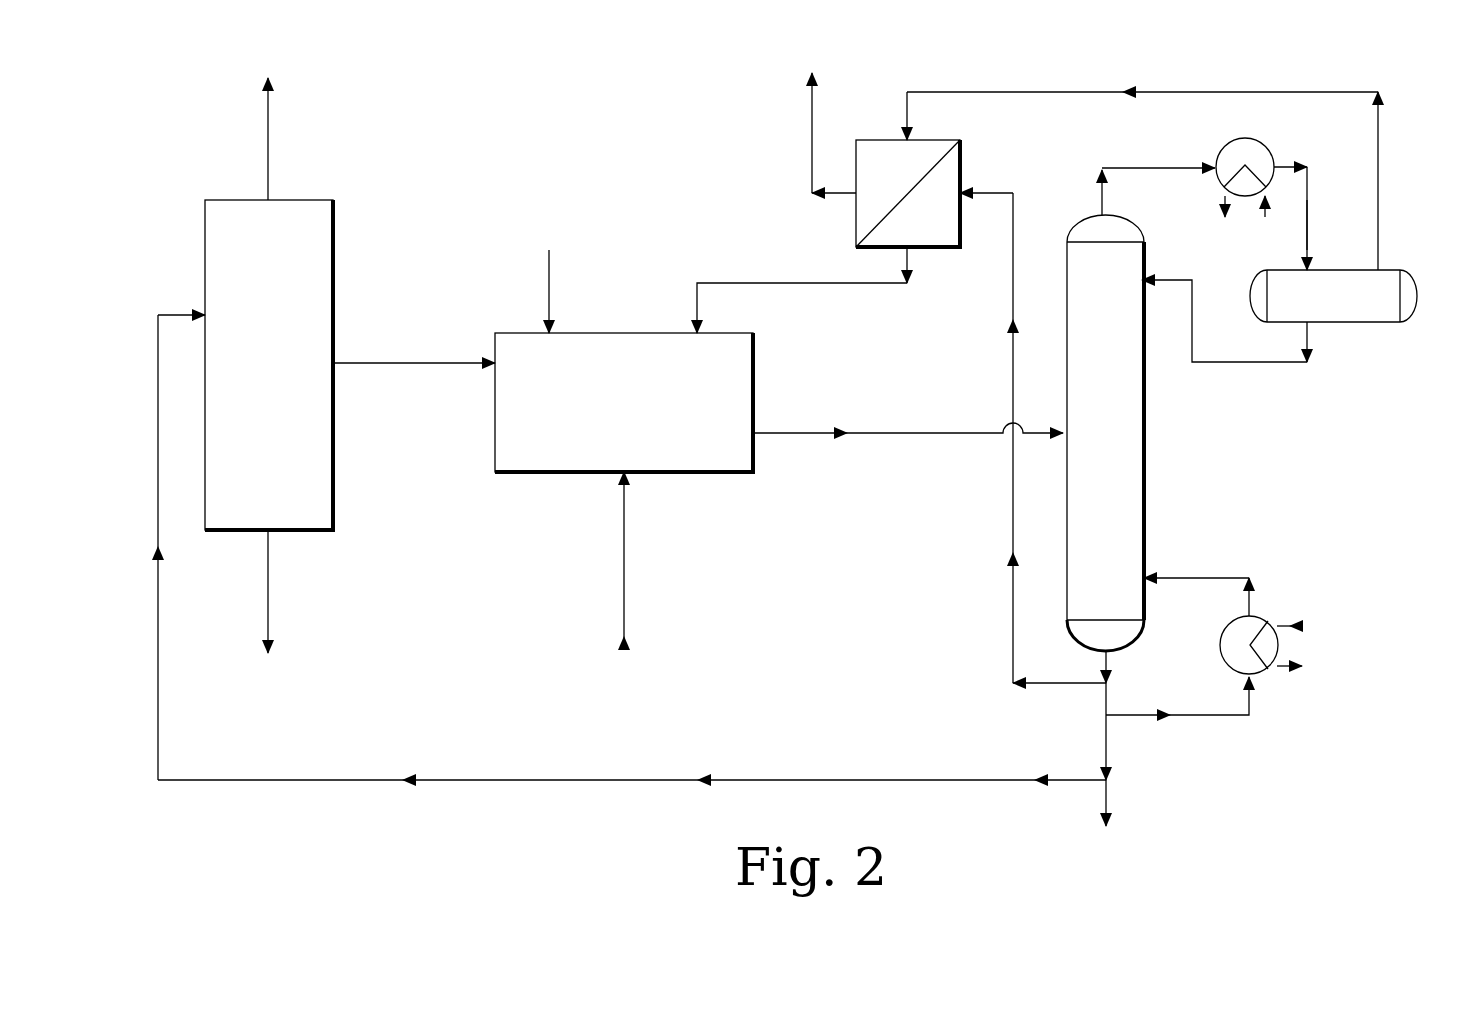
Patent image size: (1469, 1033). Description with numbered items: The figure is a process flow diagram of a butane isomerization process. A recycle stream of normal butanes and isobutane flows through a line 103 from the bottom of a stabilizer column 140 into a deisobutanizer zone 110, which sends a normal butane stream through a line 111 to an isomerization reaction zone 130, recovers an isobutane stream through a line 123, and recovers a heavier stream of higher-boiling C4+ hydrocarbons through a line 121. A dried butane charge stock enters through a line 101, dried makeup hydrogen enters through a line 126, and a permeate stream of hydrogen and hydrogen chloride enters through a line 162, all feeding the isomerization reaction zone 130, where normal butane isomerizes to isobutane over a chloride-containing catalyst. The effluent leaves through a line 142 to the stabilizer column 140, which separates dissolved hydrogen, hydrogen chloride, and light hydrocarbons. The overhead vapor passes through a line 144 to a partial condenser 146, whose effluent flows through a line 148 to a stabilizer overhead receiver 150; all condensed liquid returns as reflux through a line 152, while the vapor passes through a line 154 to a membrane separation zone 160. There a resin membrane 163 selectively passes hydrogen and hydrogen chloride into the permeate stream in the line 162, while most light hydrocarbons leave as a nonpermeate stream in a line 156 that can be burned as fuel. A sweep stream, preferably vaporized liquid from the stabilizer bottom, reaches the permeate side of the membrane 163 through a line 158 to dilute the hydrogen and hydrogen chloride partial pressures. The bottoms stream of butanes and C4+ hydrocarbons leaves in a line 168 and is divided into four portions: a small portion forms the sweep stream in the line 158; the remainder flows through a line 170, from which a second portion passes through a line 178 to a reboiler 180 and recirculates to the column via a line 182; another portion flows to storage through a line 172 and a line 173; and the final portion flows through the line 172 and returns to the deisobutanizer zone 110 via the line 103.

The line 101 is at (626, 560).
The line 103 is at (160, 612).
The deisobutanizer zone 110 is at (298, 379).
The line 111 is at (380, 363).
The line 121 is at (270, 585).
The line 123 is at (270, 118).
The line 126 is at (549, 278).
The isomerization reaction zone 130 is at (662, 416).
The stabilizer column 140 is at (1133, 446).
The line 142 is at (884, 436).
The line 144 is at (1100, 196).
The partial condenser 146 is at (1268, 118).
The line 148 is at (1307, 226).
The stabilizer overhead receiver 150 is at (1383, 324).
The line 152 is at (1268, 364).
The line 154 is at (1181, 89).
The line 156 is at (812, 115).
The line 158 is at (1010, 305).
The membrane separation zone 160 is at (950, 136).
The line 162 is at (840, 285).
The resin membrane 163 is at (910, 190).
The line 168 is at (1110, 660).
The line 170 is at (1103, 698).
The line 172 is at (1110, 735).
The line 173 is at (1108, 795).
The line 178 is at (1243, 718).
The reboiler 180 is at (1272, 620).
The line 182 is at (1216, 578).